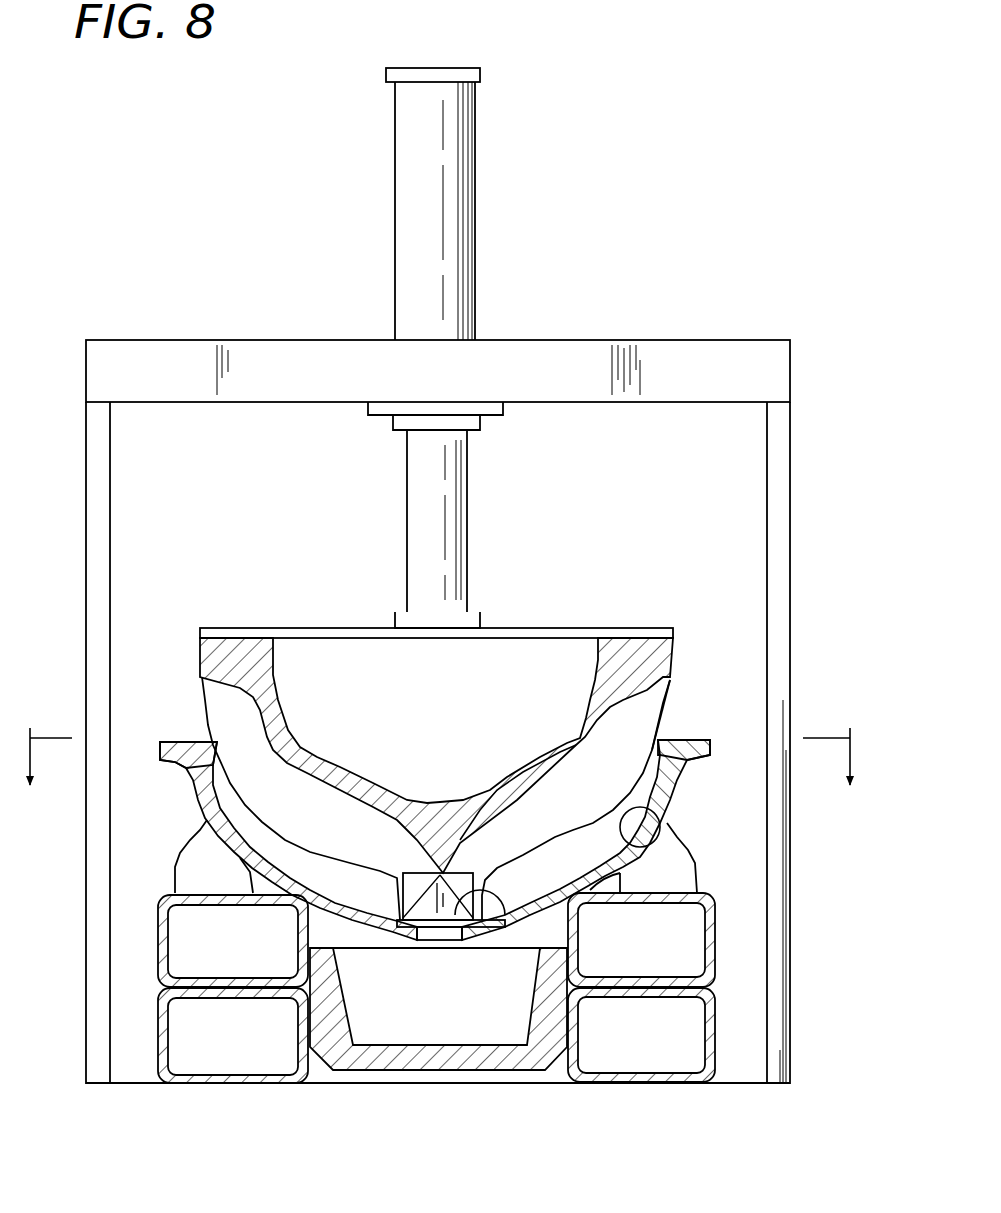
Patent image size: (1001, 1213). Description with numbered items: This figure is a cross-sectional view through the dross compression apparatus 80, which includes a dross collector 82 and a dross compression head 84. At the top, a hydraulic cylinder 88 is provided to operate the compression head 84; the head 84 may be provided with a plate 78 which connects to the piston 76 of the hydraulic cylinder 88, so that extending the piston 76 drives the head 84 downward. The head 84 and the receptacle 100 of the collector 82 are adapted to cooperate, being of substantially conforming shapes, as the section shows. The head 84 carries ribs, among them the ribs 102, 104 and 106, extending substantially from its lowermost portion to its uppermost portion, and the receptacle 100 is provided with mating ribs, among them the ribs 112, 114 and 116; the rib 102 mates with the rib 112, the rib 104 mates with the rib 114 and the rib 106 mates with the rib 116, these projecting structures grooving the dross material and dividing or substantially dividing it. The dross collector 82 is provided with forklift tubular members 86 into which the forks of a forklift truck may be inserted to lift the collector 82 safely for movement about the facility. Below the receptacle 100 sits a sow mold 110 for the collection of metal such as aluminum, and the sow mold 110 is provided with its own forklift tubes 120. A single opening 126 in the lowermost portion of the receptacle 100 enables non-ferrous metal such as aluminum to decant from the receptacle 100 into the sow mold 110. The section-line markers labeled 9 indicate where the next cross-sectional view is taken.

The dross compression apparatus 80 is at (683, 340).
The hydraulic cylinder 88 is at (472, 215).
The piston 76 is at (470, 492).
The plate 78 is at (318, 628).
The dross compression head 84 is at (690, 636).
The rib 102 is at (465, 842).
The rib 104 is at (205, 688).
The rib 106 is at (663, 705).
The receptacle 100 is at (655, 807).
The mating rib 114 is at (215, 742).
The mating rib 116 is at (665, 740).
The dross collector 82 is at (722, 745).
The mating rib 112 is at (505, 922).
The opening 126 is at (420, 930).
The sow mold 110 is at (462, 1070).
The forklift tubular members 86 is at (160, 922).
The forklift tubes 120 is at (160, 1040).
The section line 9- 9 is at (438, 778).